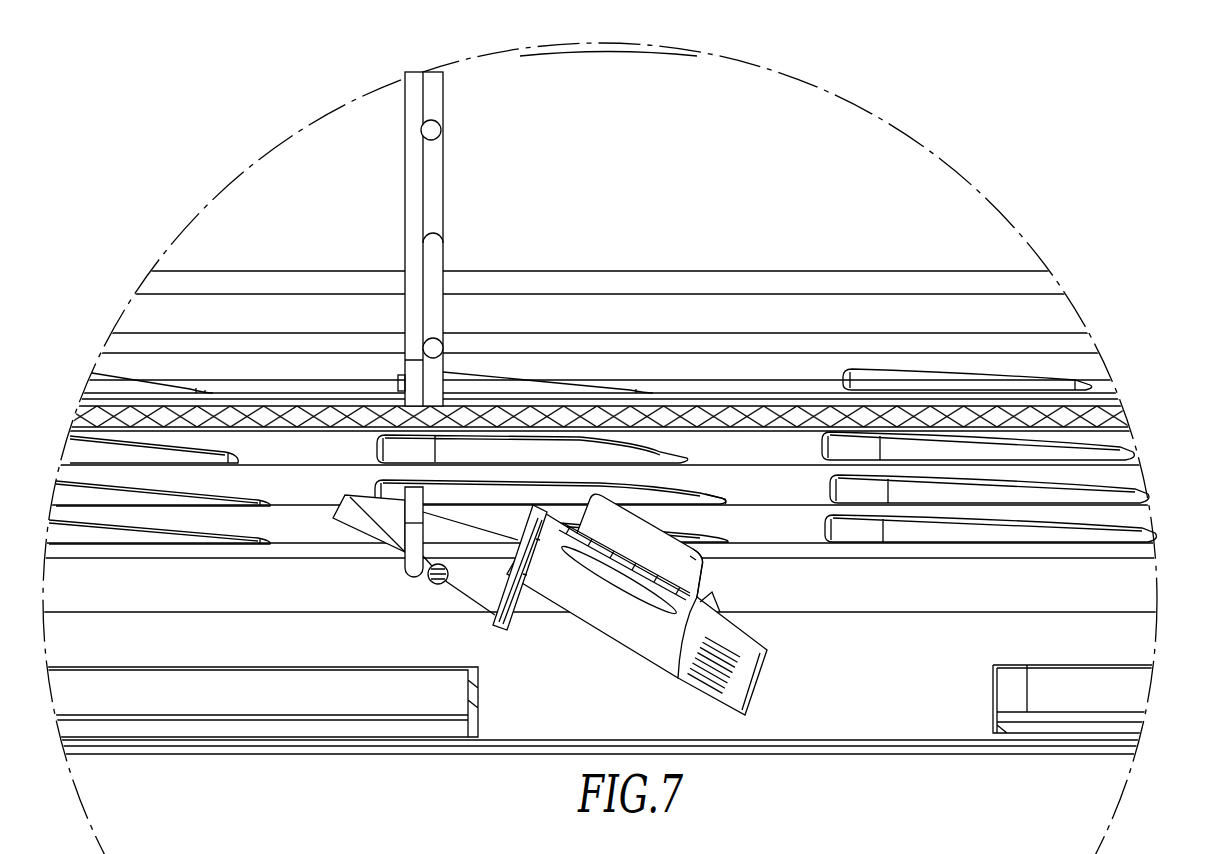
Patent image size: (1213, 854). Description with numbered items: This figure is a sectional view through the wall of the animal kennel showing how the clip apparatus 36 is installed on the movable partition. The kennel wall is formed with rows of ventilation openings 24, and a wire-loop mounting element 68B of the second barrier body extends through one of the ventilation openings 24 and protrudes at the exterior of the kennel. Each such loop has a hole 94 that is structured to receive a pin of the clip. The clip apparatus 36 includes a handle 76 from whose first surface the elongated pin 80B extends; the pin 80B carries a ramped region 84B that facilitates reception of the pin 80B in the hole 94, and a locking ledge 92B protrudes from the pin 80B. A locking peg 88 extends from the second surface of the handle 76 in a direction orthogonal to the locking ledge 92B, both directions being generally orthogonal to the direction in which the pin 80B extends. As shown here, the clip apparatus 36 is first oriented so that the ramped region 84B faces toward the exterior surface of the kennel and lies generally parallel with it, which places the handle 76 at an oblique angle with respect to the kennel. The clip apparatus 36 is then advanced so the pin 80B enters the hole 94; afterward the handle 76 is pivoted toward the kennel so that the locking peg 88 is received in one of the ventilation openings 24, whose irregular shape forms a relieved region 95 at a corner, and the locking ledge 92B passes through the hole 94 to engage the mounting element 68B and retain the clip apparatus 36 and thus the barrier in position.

The ventilation openings 24 is at (585, 447).
The clip apparatus 36 is at (788, 675).
The mounting element 68B is at (408, 578).
The handle 76 is at (595, 630).
The elongated pin 80B is at (463, 592).
The ramped region 84B is at (443, 507).
The locking peg 88 is at (697, 568).
The locking ledge 92B is at (437, 584).
The hole 94 is at (405, 538).
The relieved region 95 is at (703, 496).